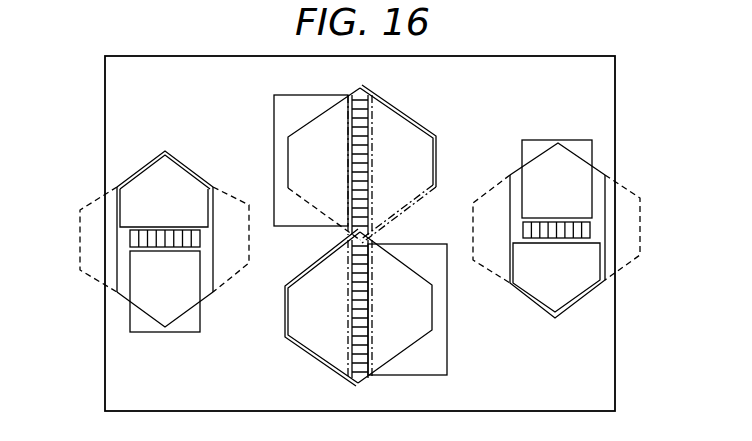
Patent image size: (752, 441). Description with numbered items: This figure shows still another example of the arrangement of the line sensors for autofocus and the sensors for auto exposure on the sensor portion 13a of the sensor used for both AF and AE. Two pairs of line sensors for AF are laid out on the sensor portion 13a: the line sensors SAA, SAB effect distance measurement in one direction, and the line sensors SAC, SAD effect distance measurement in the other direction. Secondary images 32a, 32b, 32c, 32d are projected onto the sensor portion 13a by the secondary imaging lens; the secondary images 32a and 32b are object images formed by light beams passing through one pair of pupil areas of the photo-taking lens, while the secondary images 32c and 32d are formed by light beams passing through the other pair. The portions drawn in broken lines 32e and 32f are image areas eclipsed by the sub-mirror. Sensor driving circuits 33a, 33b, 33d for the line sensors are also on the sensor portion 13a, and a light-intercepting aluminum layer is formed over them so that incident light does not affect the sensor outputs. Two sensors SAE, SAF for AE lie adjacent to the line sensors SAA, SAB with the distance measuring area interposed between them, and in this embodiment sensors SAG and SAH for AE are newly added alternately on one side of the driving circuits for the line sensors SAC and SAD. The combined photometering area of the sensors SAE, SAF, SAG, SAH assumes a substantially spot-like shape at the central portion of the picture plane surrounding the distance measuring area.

The sensor portion 13a is at (622, 363).
The secondary image 32a is at (303, 123).
The secondary image 32b is at (413, 347).
The secondary image 32c is at (573, 307).
The secondary image 32d is at (138, 313).
The eclipsed image area 32e is at (640, 217).
The eclipsed image area 32f is at (80, 228).
The sensor driving circuit 33a is at (273, 165).
The sensor driving circuit 33b is at (447, 348).
The sensor driving circuit 33d is at (150, 333).
The line sensor for AF SAA is at (348, 122).
The line sensor for AF SAB is at (370, 355).
The line sensor for AF SAC is at (553, 222).
The line sensor for AF SAD is at (172, 233).
The sensor for AE SAE is at (395, 125).
The sensor for AE SAF is at (320, 347).
The sensor for AE SAG is at (532, 287).
The sensor for AE SAH is at (167, 173).